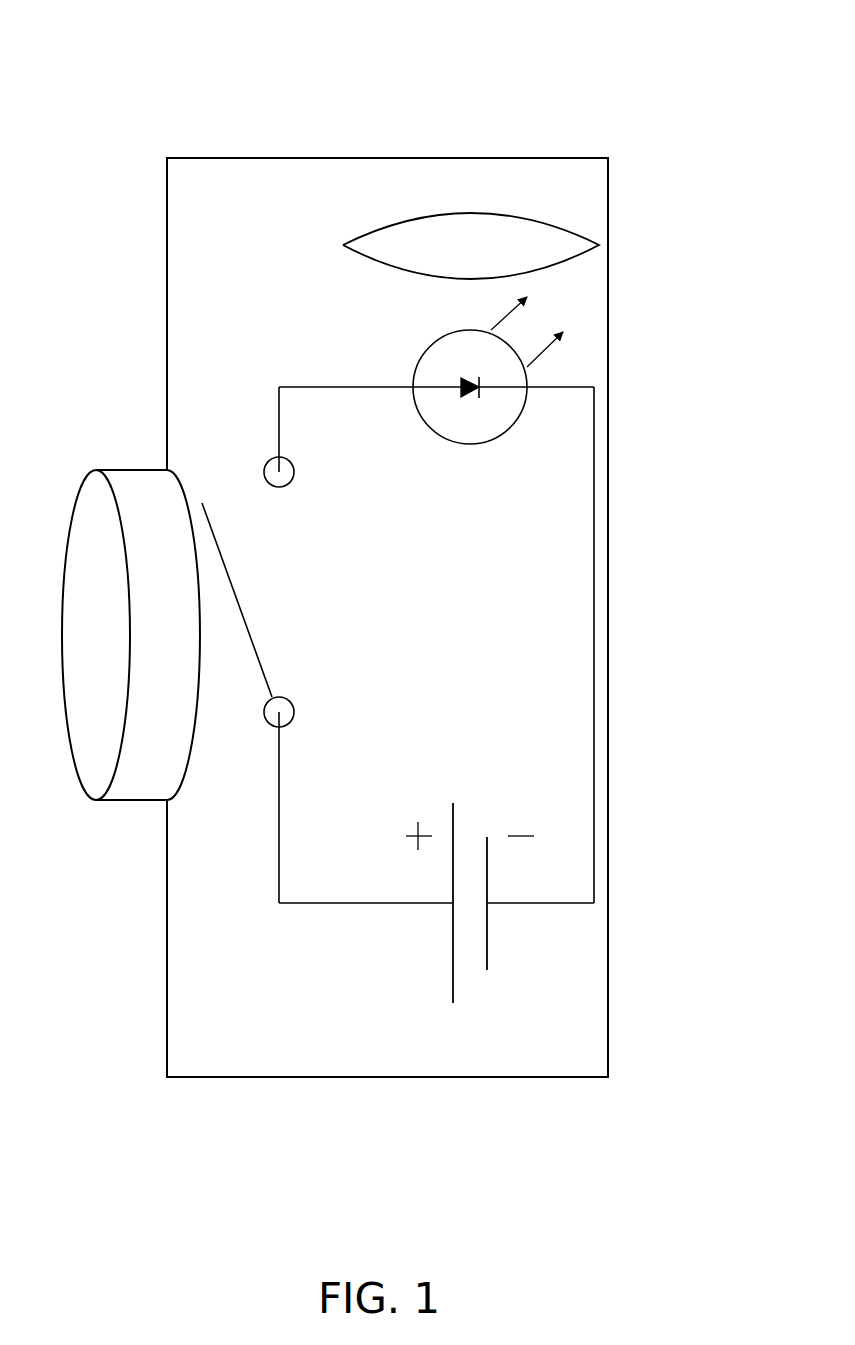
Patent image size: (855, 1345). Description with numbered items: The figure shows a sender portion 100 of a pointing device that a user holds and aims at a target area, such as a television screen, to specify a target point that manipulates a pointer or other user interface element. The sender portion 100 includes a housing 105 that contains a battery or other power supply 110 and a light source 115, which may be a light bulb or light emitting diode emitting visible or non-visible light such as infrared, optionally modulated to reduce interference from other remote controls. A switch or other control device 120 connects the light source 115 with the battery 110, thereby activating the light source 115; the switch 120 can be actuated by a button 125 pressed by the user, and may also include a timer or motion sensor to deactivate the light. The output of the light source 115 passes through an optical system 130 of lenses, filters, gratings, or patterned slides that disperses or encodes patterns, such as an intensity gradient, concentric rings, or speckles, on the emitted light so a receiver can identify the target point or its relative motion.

The sender portion 100 is at (379, 542).
The housing 105 is at (609, 329).
The battery 110 is at (475, 903).
The light source 115 is at (488, 370).
The switch 120 is at (243, 606).
The button 125 is at (131, 635).
The optical system 130 is at (471, 246).